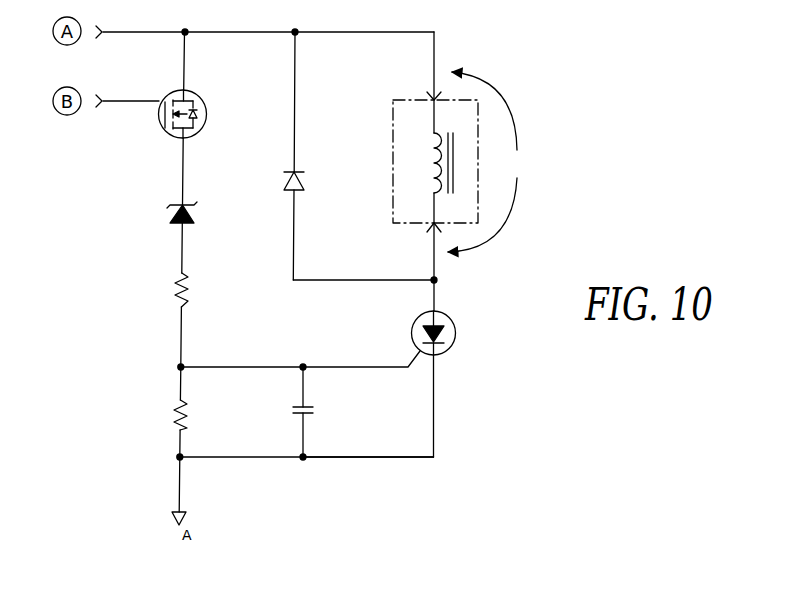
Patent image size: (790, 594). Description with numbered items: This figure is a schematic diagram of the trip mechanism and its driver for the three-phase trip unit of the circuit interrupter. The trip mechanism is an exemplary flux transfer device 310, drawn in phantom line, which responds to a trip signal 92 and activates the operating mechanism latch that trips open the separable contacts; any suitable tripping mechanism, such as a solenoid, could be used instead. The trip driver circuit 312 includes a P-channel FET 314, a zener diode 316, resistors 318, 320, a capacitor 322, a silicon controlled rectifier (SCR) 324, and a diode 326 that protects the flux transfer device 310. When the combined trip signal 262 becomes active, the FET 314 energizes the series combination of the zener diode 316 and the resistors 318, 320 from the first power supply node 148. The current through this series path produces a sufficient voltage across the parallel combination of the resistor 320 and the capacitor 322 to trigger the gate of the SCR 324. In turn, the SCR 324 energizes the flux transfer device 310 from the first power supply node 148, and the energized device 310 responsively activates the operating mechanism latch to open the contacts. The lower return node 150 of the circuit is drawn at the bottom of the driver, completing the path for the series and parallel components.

The first power supply node 148 is at (188, 30).
The combined trip signal 262 is at (135, 102).
The P-channel FET 314 is at (206, 101).
The zener diode 316 is at (168, 218).
The resistor 318 is at (173, 286).
The resistor 320 is at (185, 425).
The capacitor 322 is at (316, 413).
The silicon controlled rectifier (SCR) 324 is at (454, 340).
The diode 326 is at (283, 182).
The flux transfer device 310 is at (397, 97).
The trip signal 92 is at (465, 162).
The ground node 150 is at (176, 459).
The trip driver circuit 312 is at (390, 506).